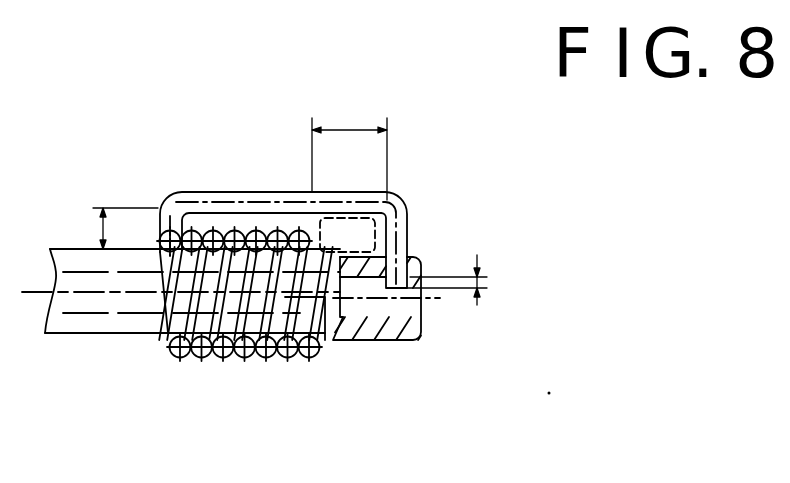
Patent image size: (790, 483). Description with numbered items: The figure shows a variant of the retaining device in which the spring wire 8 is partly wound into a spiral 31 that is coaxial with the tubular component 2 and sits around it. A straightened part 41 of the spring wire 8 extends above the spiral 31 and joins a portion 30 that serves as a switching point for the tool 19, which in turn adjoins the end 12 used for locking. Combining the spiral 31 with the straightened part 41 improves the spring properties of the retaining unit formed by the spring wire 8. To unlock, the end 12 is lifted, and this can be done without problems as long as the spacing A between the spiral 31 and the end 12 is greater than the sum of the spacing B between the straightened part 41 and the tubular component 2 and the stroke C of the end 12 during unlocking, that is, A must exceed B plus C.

The spring wire 8 is at (145, 178).
The tubular component 2 is at (78, 325).
The end 12 is at (410, 232).
The tool 19 is at (368, 227).
The portion 30 is at (327, 198).
The spiral 31 is at (238, 358).
The straightened part 41 is at (233, 191).